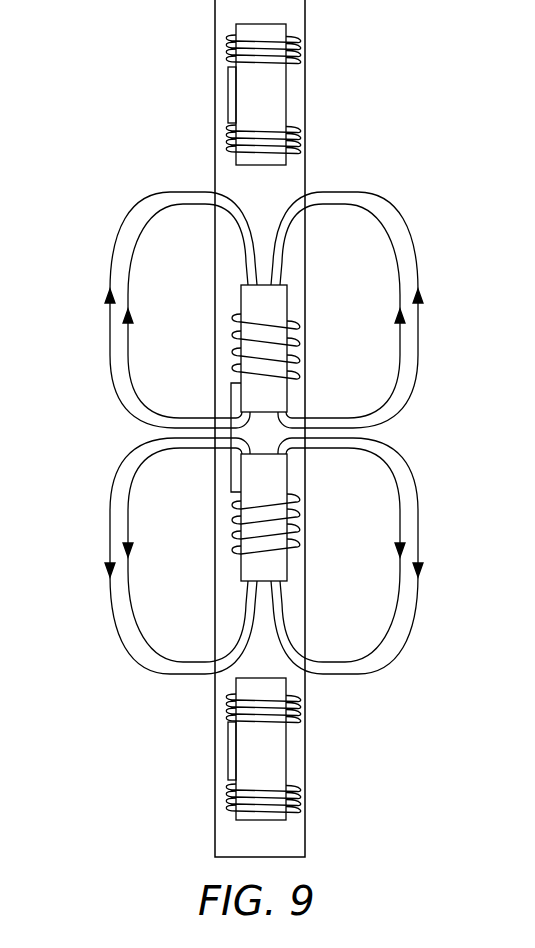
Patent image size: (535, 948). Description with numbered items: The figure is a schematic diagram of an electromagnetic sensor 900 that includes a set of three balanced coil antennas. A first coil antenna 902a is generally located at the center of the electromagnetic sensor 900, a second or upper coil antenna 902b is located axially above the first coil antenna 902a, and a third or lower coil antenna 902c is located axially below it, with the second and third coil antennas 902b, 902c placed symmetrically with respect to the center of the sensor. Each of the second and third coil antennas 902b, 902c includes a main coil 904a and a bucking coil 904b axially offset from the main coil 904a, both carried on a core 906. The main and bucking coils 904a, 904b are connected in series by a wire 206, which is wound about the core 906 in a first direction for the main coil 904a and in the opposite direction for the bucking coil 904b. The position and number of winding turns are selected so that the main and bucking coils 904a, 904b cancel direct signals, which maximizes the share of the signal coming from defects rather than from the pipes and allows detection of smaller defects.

The electromagnetic sensor 900 is at (116, 59).
The first coil antenna 902a is at (211, 329).
The second coil antenna 902b is at (315, 56).
The third coil antenna 902c is at (316, 721).
The main coil 904a is at (289, 61).
The bucking coil 904b is at (290, 139).
The core 906 is at (288, 103).
The wire 206 is at (228, 96).